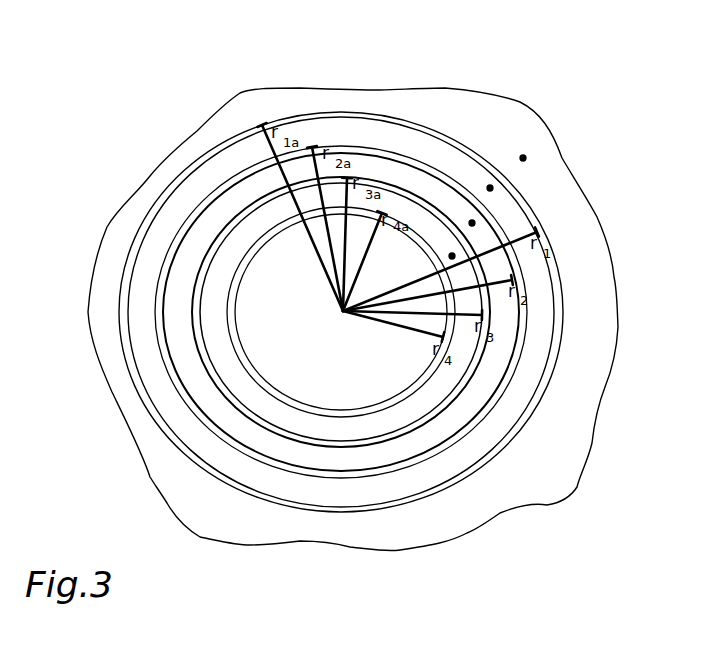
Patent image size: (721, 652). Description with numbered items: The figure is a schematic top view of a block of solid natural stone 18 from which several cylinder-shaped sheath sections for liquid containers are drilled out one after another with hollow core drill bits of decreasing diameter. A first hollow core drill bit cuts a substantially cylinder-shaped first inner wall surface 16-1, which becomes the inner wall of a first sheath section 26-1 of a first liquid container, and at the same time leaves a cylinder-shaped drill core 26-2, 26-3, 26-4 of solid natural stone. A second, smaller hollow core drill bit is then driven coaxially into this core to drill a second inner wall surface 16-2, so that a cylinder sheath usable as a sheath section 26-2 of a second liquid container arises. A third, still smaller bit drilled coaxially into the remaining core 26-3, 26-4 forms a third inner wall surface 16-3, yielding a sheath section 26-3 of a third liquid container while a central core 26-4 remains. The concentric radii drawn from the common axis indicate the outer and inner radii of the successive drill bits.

The first inner wall surface 16-1 is at (338, 112).
The second inner wall surface 16-2 is at (351, 147).
The third inner wall surface 16-3 is at (397, 194).
The solid natural stone 18 is at (513, 138).
The first sheath section 26-1 is at (524, 158).
The second sheath section 26-2 is at (491, 188).
The third sheath section 26-3 is at (473, 223).
The drill core 26-4 is at (462, 261).